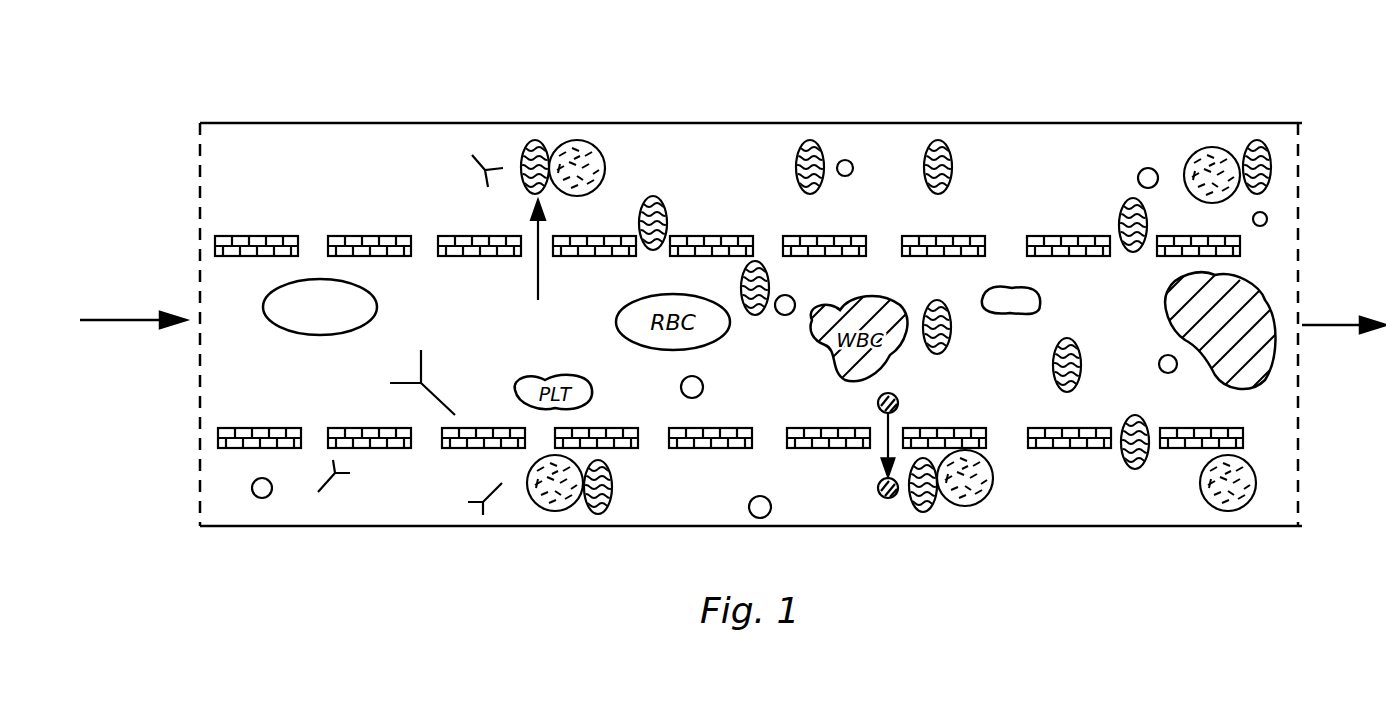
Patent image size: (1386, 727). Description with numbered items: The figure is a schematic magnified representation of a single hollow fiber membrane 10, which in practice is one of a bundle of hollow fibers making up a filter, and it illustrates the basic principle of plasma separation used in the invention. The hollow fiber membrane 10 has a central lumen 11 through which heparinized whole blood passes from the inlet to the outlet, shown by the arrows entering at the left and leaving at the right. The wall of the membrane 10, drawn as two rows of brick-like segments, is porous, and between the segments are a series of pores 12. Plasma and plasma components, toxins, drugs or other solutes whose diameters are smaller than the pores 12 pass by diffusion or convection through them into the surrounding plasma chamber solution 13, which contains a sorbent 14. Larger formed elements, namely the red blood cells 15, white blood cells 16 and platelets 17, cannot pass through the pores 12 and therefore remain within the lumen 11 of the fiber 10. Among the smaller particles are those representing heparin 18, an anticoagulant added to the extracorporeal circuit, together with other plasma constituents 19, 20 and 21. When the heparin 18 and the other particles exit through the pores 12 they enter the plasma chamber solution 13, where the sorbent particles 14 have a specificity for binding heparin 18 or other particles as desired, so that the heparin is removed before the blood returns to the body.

The hollow fiber membrane 10 is at (727, 236).
The central lumen 11 is at (240, 278).
The pores 12 is at (885, 238).
The plasma chamber solution 13 is at (1080, 170).
The sorbent 14 is at (578, 140).
The red blood cells 15 is at (322, 280).
The white blood cells 16 is at (1250, 300).
The platelets 17 is at (1000, 285).
The heparin 18 is at (537, 140).
The plasma constituent 19 is at (845, 160).
The plasma constituent 20 is at (485, 158).
The plasma constituent 21 is at (885, 497).